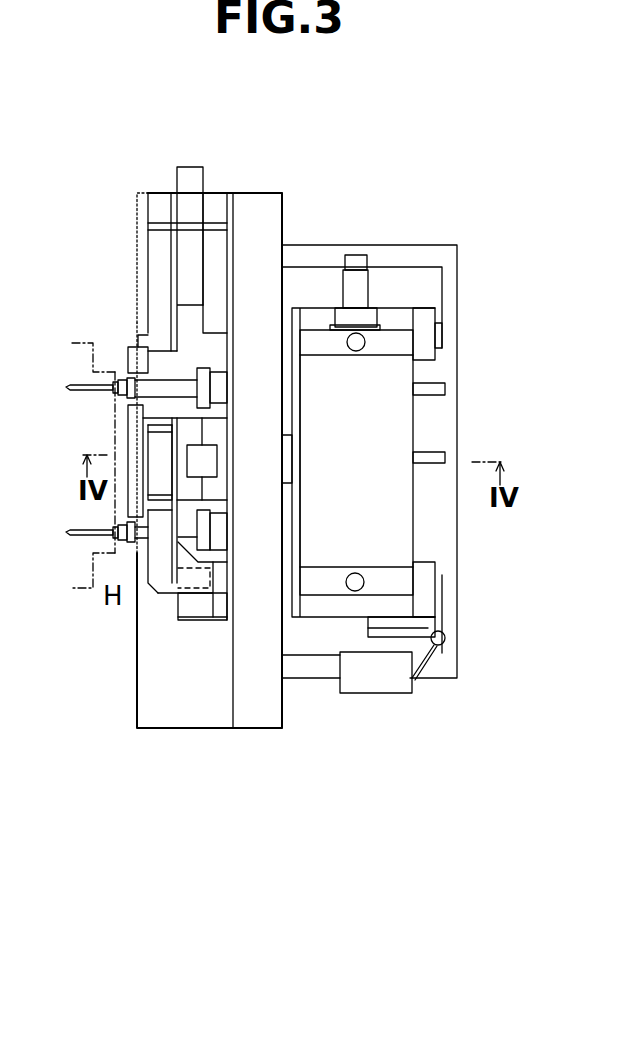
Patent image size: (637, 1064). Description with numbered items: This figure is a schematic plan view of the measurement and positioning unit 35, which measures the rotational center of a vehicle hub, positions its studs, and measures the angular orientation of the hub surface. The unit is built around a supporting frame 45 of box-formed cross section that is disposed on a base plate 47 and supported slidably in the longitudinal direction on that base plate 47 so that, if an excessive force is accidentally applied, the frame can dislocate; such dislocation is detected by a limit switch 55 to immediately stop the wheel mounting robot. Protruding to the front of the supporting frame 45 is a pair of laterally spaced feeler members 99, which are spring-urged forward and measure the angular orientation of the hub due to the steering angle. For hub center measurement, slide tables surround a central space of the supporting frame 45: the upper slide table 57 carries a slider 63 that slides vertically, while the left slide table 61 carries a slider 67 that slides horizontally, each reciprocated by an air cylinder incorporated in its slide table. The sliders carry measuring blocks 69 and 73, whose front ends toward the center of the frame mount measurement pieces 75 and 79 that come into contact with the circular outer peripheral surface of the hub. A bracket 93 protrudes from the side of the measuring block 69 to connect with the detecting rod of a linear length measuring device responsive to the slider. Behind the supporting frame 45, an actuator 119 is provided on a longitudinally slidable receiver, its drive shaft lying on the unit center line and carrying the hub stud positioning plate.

The measurement and positioning unit 35 is at (158, 168).
The slider 67 is at (192, 173).
The left slide table 61 is at (215, 200).
The measuring block 73 is at (157, 243).
The measurement piece 79 is at (128, 360).
The feeler member 99 is at (76, 385).
The slider 63 is at (188, 432).
The measurement piece 75 is at (133, 440).
The measuring block 69 is at (157, 472).
The upper slide table 57 is at (218, 433).
The bracket 93 is at (160, 585).
The supporting frame 45 is at (283, 195).
The base plate 47 is at (452, 432).
The actuator 119 is at (398, 410).
The limit switch 55 is at (445, 642).